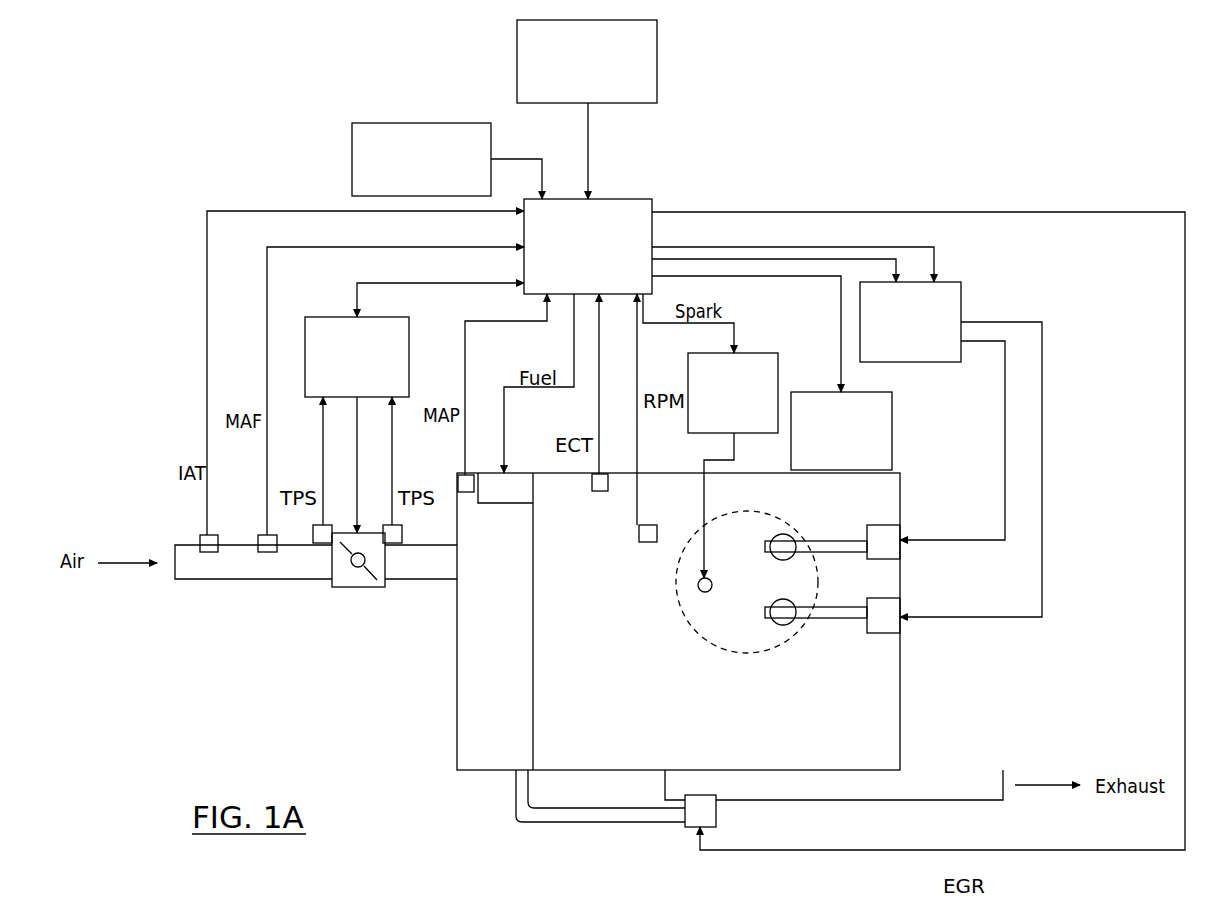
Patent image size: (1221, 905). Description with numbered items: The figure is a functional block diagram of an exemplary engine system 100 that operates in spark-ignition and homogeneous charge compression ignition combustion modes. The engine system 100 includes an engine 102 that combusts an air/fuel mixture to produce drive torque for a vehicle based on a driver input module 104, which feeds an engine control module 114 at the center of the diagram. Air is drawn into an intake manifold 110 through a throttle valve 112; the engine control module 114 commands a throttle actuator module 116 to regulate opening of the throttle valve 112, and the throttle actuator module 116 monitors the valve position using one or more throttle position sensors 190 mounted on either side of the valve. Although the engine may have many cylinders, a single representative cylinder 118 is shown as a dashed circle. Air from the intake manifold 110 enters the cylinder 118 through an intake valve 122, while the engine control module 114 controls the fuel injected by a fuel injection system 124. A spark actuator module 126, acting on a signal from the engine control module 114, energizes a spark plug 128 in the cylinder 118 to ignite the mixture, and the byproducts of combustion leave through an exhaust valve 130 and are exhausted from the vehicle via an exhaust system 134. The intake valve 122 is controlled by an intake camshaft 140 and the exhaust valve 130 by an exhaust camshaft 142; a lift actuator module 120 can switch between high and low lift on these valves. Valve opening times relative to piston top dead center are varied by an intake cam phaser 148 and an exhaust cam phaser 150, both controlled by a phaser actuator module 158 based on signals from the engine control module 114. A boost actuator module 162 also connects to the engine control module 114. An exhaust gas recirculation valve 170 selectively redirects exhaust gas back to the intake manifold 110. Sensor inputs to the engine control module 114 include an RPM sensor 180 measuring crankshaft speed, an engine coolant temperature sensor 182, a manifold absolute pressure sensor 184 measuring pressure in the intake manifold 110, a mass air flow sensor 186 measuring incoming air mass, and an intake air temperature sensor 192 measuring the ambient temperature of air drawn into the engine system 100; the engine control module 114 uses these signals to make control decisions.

The engine system 100 is at (162, 133).
The engine 102 is at (900, 488).
The driver input module 104 is at (352, 158).
The intake manifold 110 is at (457, 708).
The throttle valve 112 is at (353, 588).
The engine control module 114 is at (652, 205).
The throttle actuator module 116 is at (322, 317).
The cylinder 118 is at (708, 645).
The lift actuator module 120 is at (892, 418).
The intake valve 122 is at (772, 535).
The fuel injection system 124 is at (503, 503).
The spark actuator module 126 is at (762, 353).
The spark plug 128 is at (698, 585).
The exhaust valve 130 is at (780, 626).
The exhaust system 134 is at (975, 800).
The intake camshaft 140 is at (840, 541).
The exhaust camshaft 142 is at (845, 619).
The intake cam phaser 148 is at (880, 525).
The exhaust cam phaser 150 is at (880, 634).
The phaser actuator module 158 is at (961, 293).
The boost actuator module 162 is at (657, 65).
The exhaust gas recirculation valve 170 is at (702, 795).
The RPM sensor 180 is at (639, 531).
The engine coolant temperature sensor 182 is at (597, 491).
The manifold absolute pressure sensor 184 is at (458, 475).
The mass air flow sensor 186 is at (256, 552).
The throttle position sensor 190 is at (322, 545).
The intake air temperature sensor 192 is at (200, 535).